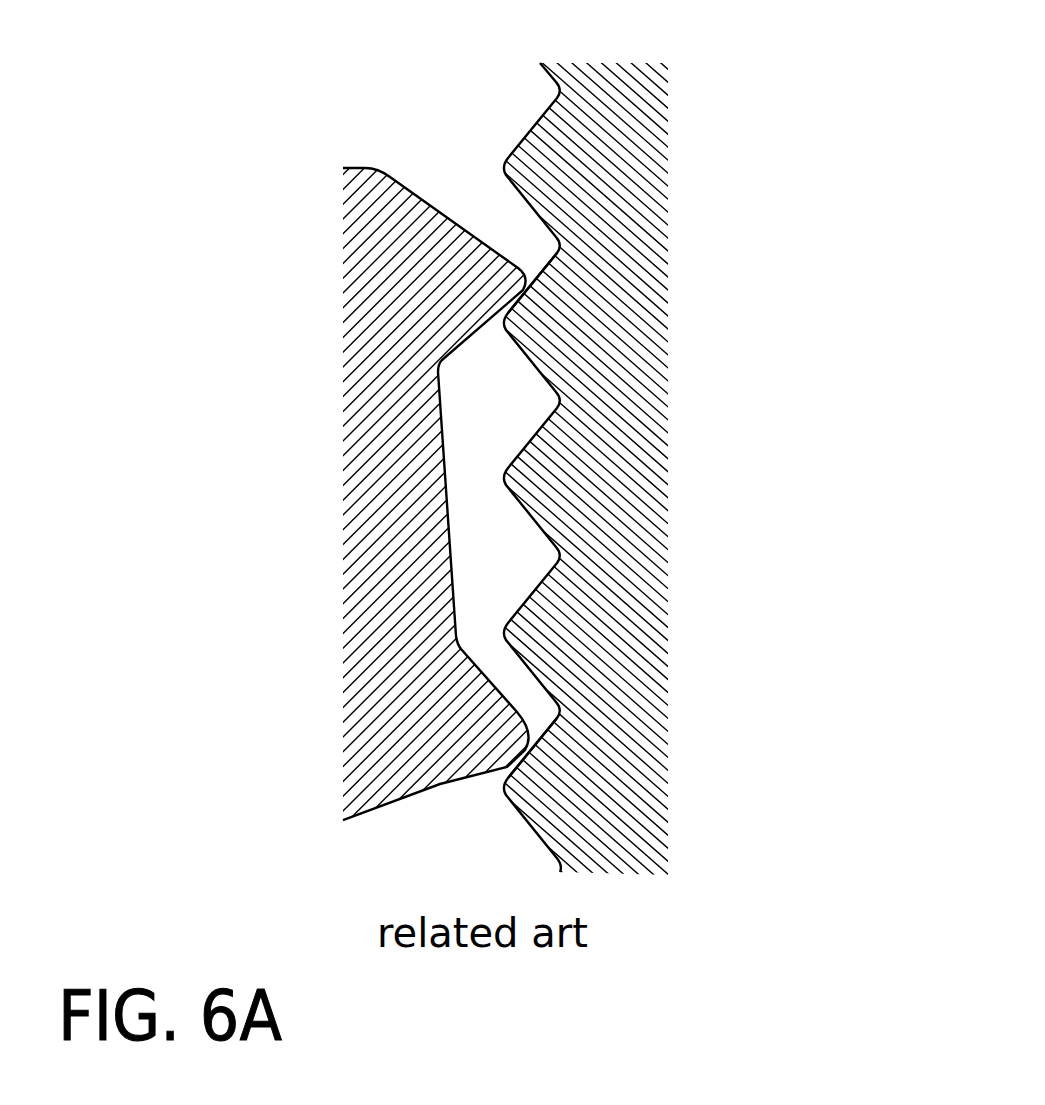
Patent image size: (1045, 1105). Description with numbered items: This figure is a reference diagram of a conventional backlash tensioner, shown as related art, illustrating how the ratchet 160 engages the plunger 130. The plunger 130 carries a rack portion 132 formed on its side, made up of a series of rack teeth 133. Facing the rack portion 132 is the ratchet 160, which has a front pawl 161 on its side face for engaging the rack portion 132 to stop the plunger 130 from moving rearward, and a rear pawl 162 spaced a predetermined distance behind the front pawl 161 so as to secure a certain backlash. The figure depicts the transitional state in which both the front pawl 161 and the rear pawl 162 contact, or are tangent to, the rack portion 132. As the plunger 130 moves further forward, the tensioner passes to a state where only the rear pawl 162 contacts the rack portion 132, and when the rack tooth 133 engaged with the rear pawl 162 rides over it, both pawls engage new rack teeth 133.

The plunger 130 is at (522, 454).
The rack portion 132 is at (610, 492).
The rack tooth 133 is at (513, 322).
The ratchet 160 is at (522, 495).
The front pawl 161 is at (497, 297).
The rear pawl 162 is at (508, 740).